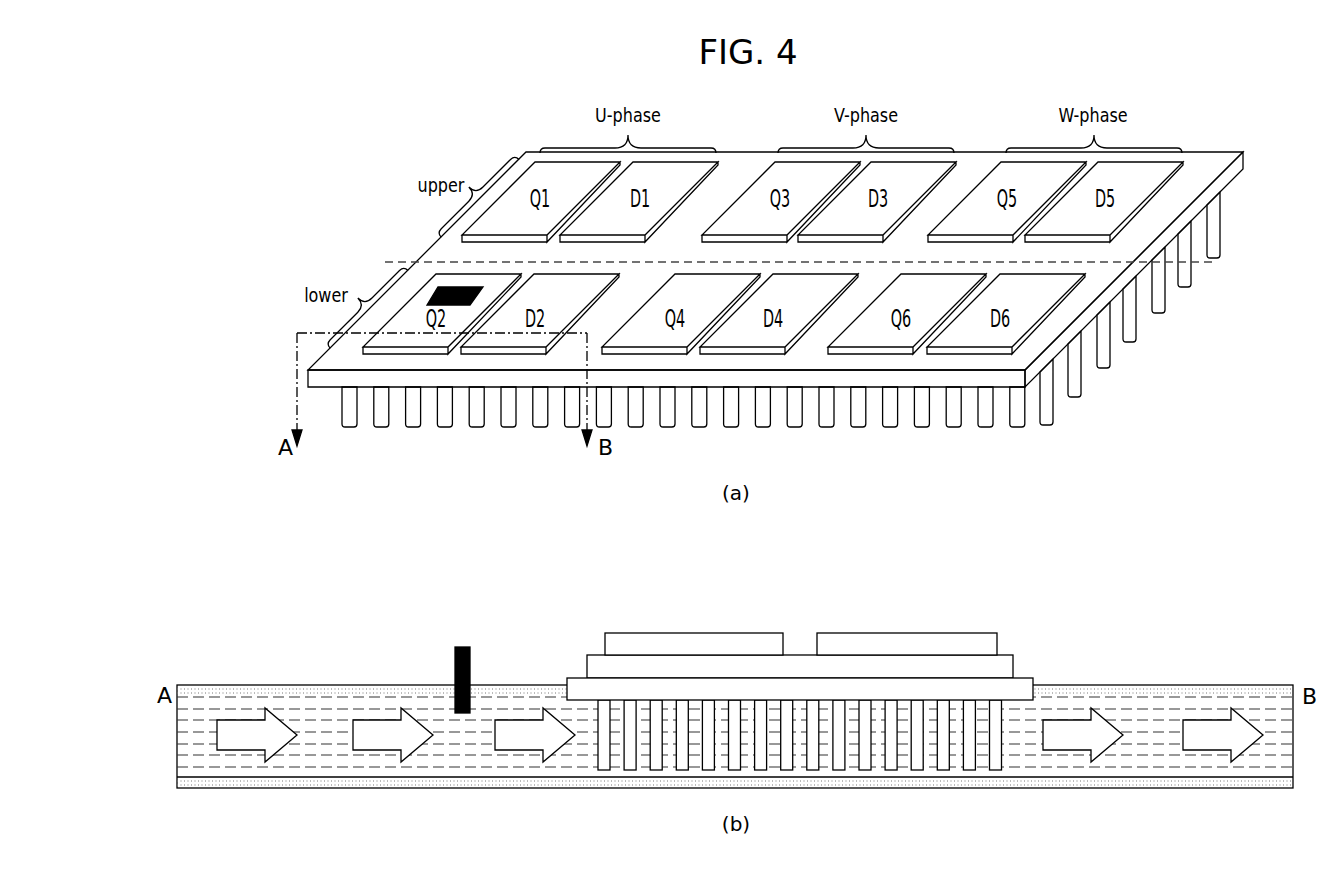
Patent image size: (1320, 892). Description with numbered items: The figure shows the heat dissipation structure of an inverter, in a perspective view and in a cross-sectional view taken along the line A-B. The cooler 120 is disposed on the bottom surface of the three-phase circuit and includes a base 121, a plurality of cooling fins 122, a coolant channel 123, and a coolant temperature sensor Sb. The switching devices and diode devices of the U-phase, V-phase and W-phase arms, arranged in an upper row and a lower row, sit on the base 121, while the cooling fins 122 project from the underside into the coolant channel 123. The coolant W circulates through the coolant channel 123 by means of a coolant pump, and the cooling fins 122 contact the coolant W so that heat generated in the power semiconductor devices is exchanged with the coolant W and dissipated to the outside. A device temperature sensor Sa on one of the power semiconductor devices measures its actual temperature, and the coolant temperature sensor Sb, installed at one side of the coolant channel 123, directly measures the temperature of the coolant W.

The cooler 120 is at (1302, 614).
The base 121 is at (1222, 158).
The cooling fins 122 is at (1213, 217).
The coolant channel 123 is at (380, 692).
The device temperature sensor Sa is at (437, 287).
The coolant temperature sensor Sb is at (455, 672).
The coolant W is at (313, 711).